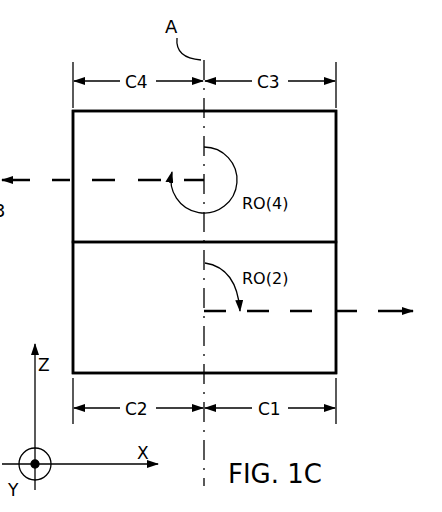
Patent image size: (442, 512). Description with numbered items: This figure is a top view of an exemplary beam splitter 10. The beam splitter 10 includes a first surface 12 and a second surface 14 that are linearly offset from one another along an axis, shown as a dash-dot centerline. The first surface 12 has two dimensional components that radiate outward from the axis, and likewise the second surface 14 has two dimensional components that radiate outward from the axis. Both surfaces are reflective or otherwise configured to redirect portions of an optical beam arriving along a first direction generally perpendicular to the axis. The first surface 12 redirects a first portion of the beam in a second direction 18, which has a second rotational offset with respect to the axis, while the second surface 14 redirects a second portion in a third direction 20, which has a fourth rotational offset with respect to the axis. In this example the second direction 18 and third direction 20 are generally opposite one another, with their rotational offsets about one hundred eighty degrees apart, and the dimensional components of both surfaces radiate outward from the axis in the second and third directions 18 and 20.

The beam splitter 10 is at (346, 135).
The first surface 12 is at (128, 358).
The second surface 14 is at (305, 154).
The second direction 18 is at (350, 309).
The third direction 20 is at (62, 176).